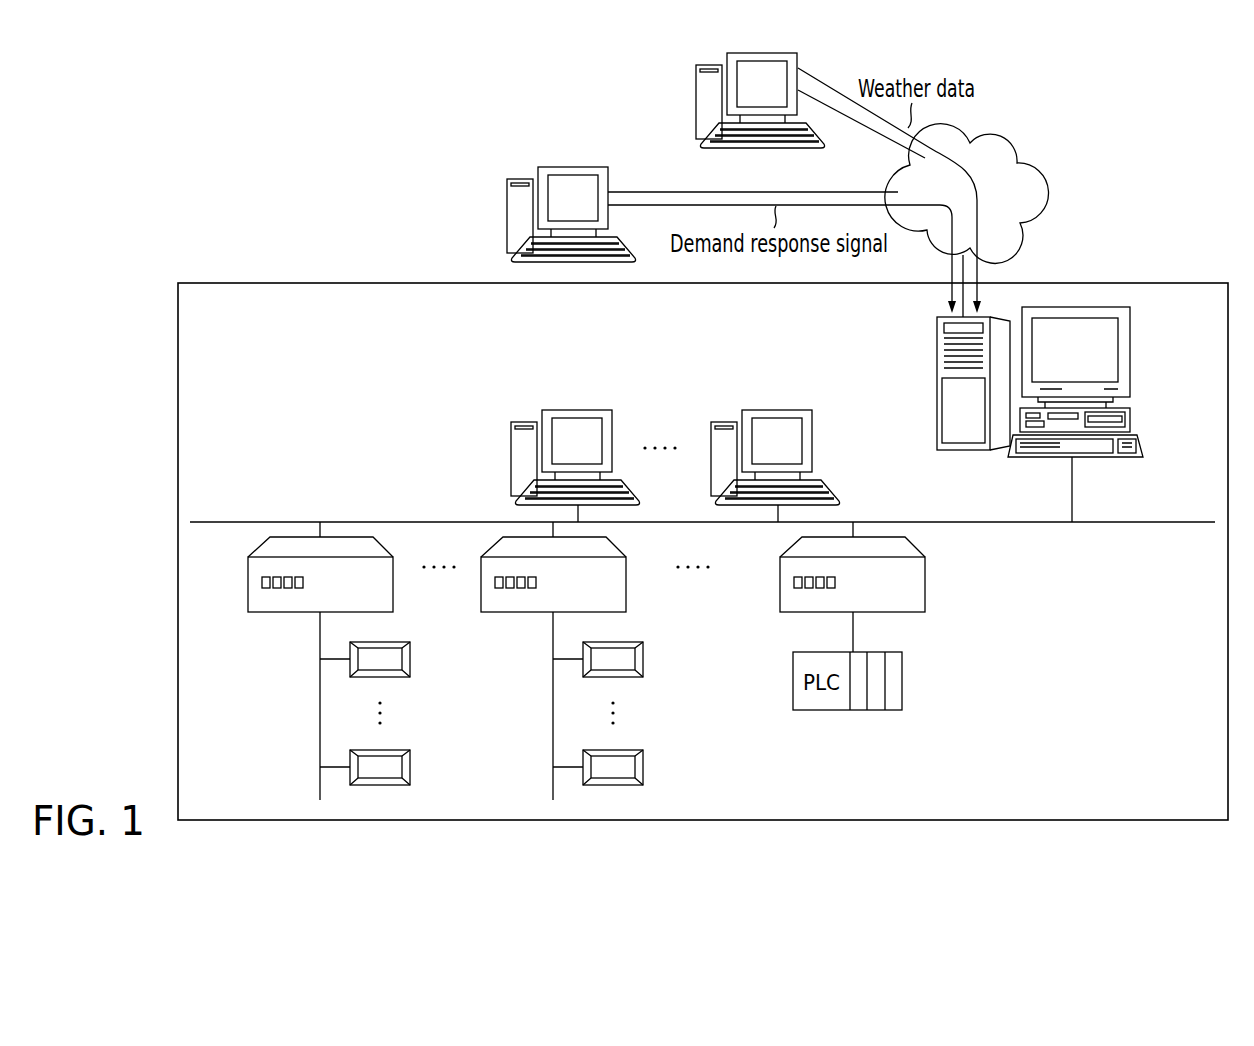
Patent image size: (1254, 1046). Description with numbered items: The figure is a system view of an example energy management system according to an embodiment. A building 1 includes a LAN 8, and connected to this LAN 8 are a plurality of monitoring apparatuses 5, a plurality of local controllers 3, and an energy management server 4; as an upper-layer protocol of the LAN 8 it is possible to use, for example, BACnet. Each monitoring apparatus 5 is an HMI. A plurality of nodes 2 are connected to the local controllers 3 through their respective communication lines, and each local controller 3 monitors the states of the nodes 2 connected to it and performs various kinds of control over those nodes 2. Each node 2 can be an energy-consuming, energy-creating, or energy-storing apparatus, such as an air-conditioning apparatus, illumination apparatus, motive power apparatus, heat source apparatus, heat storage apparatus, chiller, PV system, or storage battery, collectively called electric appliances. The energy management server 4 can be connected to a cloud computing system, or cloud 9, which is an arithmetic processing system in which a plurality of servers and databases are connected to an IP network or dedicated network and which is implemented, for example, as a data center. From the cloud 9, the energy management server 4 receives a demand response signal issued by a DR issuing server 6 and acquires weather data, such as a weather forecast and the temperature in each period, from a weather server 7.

The building 1 is at (319, 282).
The node 2 is at (411, 659).
The local controller 3 is at (265, 613).
The energy management server 4 is at (1130, 327).
The monitoring apparatus 5 is at (580, 410).
The DR issuing server 6 is at (508, 200).
The weather server 7 is at (697, 78).
The LAN 8 is at (1185, 520).
The cloud computing system 9 is at (1047, 196).